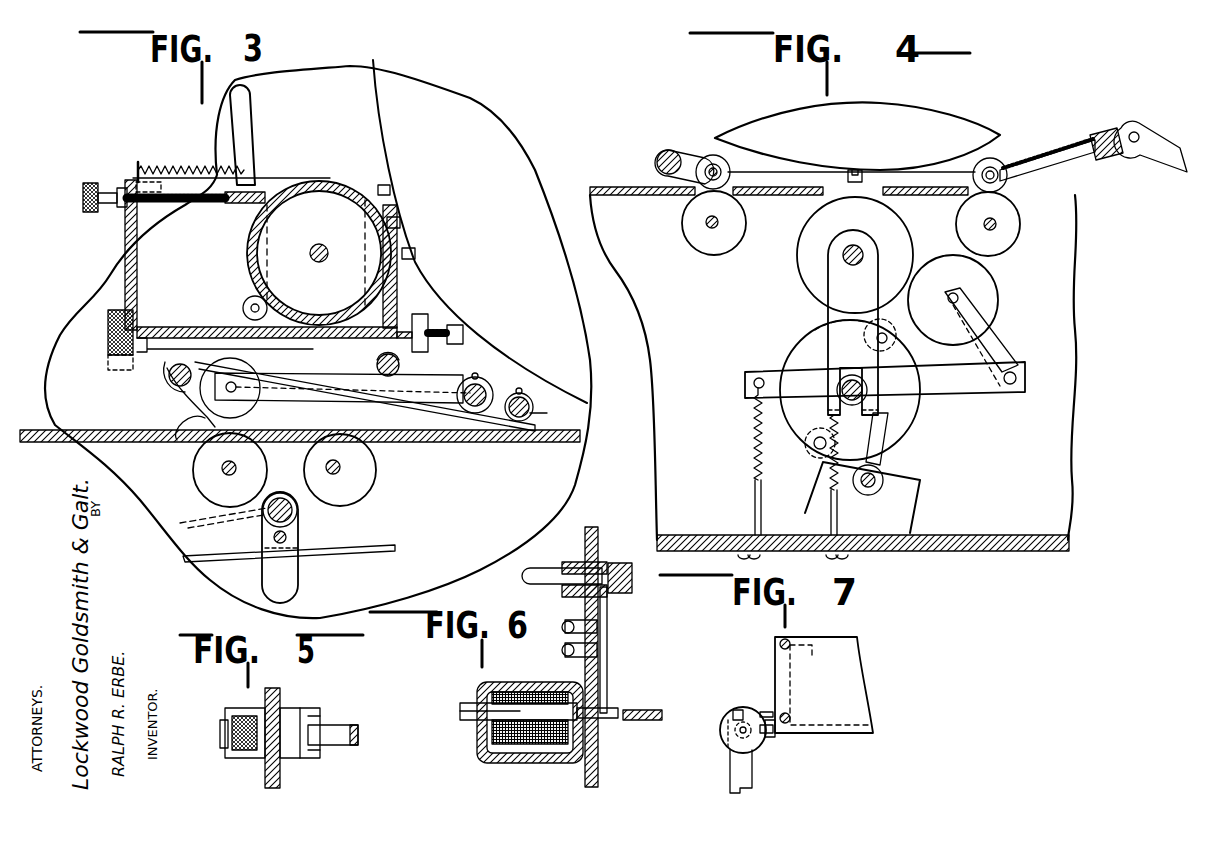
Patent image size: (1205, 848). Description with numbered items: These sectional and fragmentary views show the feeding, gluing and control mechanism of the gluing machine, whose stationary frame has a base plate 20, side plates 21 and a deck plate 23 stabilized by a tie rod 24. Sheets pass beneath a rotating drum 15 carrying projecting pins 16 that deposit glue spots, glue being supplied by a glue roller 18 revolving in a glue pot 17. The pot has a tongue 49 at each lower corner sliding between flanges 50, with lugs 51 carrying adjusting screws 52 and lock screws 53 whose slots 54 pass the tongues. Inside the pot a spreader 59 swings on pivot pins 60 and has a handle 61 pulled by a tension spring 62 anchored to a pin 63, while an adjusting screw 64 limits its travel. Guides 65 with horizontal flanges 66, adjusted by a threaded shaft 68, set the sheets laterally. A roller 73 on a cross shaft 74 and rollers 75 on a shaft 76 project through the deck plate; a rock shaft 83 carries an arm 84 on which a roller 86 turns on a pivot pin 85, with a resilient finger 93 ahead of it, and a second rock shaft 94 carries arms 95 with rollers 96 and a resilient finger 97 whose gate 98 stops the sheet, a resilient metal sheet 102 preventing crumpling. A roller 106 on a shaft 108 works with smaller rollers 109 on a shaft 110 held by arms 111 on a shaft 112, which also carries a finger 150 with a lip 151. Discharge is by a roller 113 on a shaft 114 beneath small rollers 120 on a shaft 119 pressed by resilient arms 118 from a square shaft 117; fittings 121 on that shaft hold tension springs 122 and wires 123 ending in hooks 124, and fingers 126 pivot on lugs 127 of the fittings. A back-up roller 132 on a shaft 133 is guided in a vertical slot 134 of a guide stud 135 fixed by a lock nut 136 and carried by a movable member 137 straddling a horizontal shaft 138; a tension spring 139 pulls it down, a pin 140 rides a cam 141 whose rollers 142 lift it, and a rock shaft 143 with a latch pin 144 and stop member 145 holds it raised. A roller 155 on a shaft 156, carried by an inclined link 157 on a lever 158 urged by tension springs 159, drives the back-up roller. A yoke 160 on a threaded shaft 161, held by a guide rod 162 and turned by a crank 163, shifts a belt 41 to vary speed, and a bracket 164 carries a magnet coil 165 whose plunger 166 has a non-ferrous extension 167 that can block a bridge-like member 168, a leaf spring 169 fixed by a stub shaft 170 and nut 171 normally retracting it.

In FIG. 3, the drum 15 is at (378, 103).
In FIG. 4, the drum 15 is at (882, 113).
In FIG. 3, the pins 16 is at (380, 184).
In FIG. 4, the pins 16 is at (880, 170).
In FIG. 3, the glue pot 17 is at (130, 242).
In FIG. 7, the glue pot 17 is at (838, 660).
In FIG. 3, the glue roller 18 is at (289, 183).
In FIG. 4, the base plate 20 is at (1000, 537).
In FIG. 5, the side plate 21 is at (281, 698).
In FIG. 6, the side plate 21 is at (595, 532).
In FIG. 3, the deck plate 23 is at (110, 443).
In FIG. 3, the tie rod 24 is at (307, 350).
In FIG. 3, the belt 41 is at (228, 556).
In FIG. 7, the tongue 49 is at (775, 731).
In FIG. 3, the flanges 50 is at (168, 348).
In FIG. 7, the flanges 50 is at (767, 712).
In FIG. 3, the lugs 51 is at (418, 320).
In FIG. 3, the adjusting screw 52 is at (455, 332).
In FIG. 3, the lock screws 53 is at (108, 332).
In FIG. 7, the lock screws 53 is at (723, 738).
In FIG. 7, the slots 54 is at (738, 710).
In FIG. 3, the spreader 59 is at (234, 200).
In FIG. 3, the pivot pins 60 is at (250, 307).
In FIG. 3, the handle 61 is at (243, 114).
In FIG. 3, the tension spring 62 is at (172, 167).
In FIG. 3, the pin 63 is at (133, 170).
In FIG. 3, the adjusting screw 64 is at (167, 205).
In FIG. 3, the guides 65 is at (63, 375).
In FIG. 3, the horizontal flanges 66 is at (80, 430).
In FIG. 3, the threaded shaft 68 is at (170, 377).
In FIG. 3, the roller 73 is at (200, 483).
In FIG. 3, the cross shaft 74 is at (230, 476).
In FIG. 3, the rollers 75 is at (340, 506).
In FIG. 3, the shaft 76 is at (337, 469).
In FIG. 3, the rock shaft 83 is at (400, 358).
In FIG. 3, the arm 84 is at (268, 401).
In FIG. 3, the pivot pin 85 is at (232, 396).
In FIG. 3, the roller 86 is at (177, 440).
In FIG. 3, the resilient finger 93 is at (190, 410).
In FIG. 3, the second rock shaft 94 is at (483, 383).
In FIG. 3, the arms 95 is at (440, 432).
In FIG. 3, the rollers 96 is at (290, 443).
In FIG. 3, the resilient finger 97 is at (412, 442).
In FIG. 3, the gate 98 is at (308, 443).
In FIG. 3, the sheet of resilient metal 102 is at (192, 442).
In FIG. 4, the roller 106 is at (703, 248).
In FIG. 4, the shaft 108 is at (707, 224).
In FIG. 4, the smaller rollers 109 is at (723, 157).
In FIG. 4, the shaft 110 is at (711, 167).
In FIG. 4, the arms 111 is at (700, 160).
In FIG. 3, the shaft 112 is at (528, 395).
In FIG. 4, the shaft 112 is at (670, 148).
In FIG. 4, the roller 113 is at (1012, 237).
In FIG. 4, the shaft 114 is at (996, 225).
In FIG. 4, the square shaft 117 is at (1107, 156).
In FIG. 4, the resilient arms 118 is at (995, 178).
In FIG. 4, the shaft 119 is at (993, 173).
In FIG. 4, the small rollers 120 is at (991, 170).
In FIG. 4, the fittings 121 is at (1097, 130).
In FIG. 4, the tension springs 122 is at (1050, 173).
In FIG. 4, the wires 123 is at (932, 177).
In FIG. 4, the hooks 124 is at (657, 155).
In FIG. 4, the fingers 126 is at (1155, 158).
In FIG. 4, the lugs 127 is at (1128, 128).
In FIG. 4, the back-up roller 132 is at (800, 270).
In FIG. 4, the shaft 133 is at (863, 250).
In FIG. 5, the shaft 133 is at (350, 728).
In FIG. 5, the vertical slot 134 is at (300, 720).
In FIG. 5, the guide stud 135 is at (300, 757).
In FIG. 5, the lock nut 136 is at (238, 716).
In FIG. 4, the vertically movable member 137 is at (833, 313).
In FIG. 4, the horizontal shaft 138 is at (864, 390).
In FIG. 4, the tension spring 139 is at (838, 488).
In FIG. 4, the pin 140 is at (851, 305).
In FIG. 4, the cam 141 is at (913, 412).
In FIG. 4, the rollers 142 is at (882, 333).
In FIG. 4, the rock shaft 143 is at (868, 495).
In FIG. 4, the latch pin 144 is at (885, 432).
In FIG. 4, the stop member 145 is at (807, 500).
In FIG. 3, the finger 150 is at (395, 430).
In FIG. 3, the lip 151 is at (383, 440).
In FIG. 4, the roller 155 is at (998, 296).
In FIG. 4, the shaft 156 is at (960, 294).
In FIG. 4, the inclined link 157 is at (987, 360).
In FIG. 4, the lever 158 is at (980, 392).
In FIG. 4, the tension springs 159 is at (752, 436).
In FIG. 3, the yoke 160 is at (296, 578).
In FIG. 3, the threaded shaft 161 is at (290, 518).
In FIG. 3, the guide rod 162 is at (274, 537).
In FIG. 3, the crank 163 is at (185, 525).
In FIG. 6, the bracket 164 is at (555, 760).
In FIG. 6, the magnet coil 165 is at (508, 747).
In FIG. 6, the plunger 166 is at (463, 723).
In FIG. 6, the non-ferrous extension 167 is at (608, 720).
In FIG. 6, the bridge-like member 168 is at (652, 721).
In FIG. 6, the leaf spring 169 is at (608, 654).
In FIG. 6, the stub shaft 170 is at (539, 571).
In FIG. 6, the nut 171 is at (618, 565).